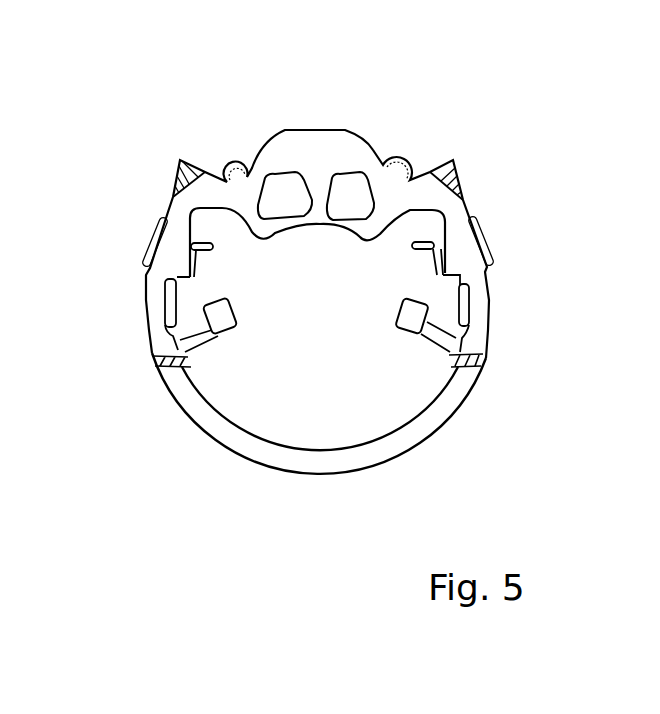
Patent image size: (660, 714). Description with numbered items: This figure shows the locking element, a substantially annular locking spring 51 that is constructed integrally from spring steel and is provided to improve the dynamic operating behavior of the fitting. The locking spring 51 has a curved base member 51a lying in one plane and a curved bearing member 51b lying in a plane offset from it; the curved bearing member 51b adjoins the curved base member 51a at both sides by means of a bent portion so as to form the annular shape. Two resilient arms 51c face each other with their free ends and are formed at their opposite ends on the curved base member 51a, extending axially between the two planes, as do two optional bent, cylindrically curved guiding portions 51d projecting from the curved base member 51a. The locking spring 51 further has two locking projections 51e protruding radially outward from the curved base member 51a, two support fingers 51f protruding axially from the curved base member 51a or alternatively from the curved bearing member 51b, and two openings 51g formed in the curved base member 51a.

The locking spring 51 is at (492, 347).
The curved base member 51a is at (460, 235).
The curved bearing member 51b is at (415, 428).
The resilient arms 51c is at (237, 162).
The guiding portions 51d is at (168, 310).
The locking projections 51e is at (177, 172).
The support fingers 51f is at (210, 248).
The openings 51g is at (283, 187).